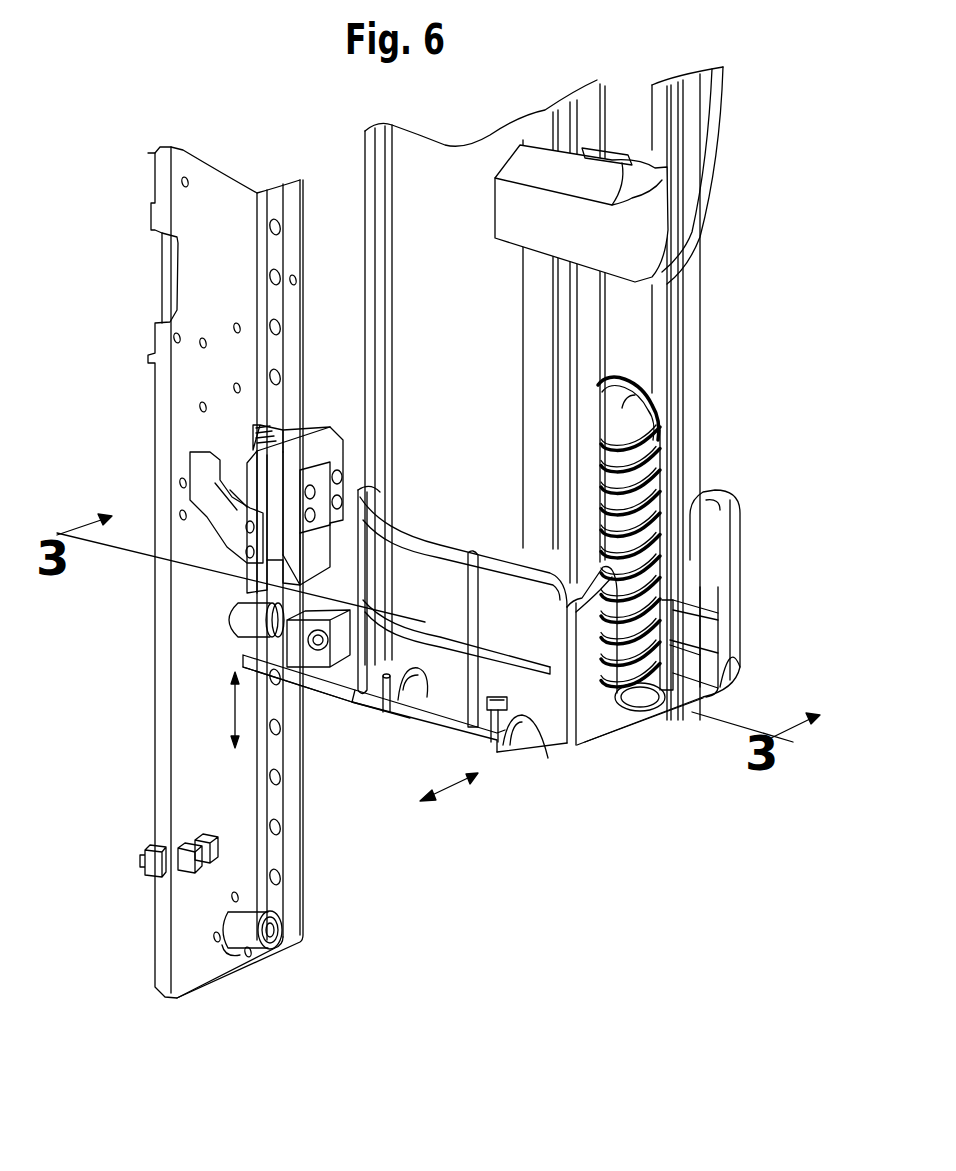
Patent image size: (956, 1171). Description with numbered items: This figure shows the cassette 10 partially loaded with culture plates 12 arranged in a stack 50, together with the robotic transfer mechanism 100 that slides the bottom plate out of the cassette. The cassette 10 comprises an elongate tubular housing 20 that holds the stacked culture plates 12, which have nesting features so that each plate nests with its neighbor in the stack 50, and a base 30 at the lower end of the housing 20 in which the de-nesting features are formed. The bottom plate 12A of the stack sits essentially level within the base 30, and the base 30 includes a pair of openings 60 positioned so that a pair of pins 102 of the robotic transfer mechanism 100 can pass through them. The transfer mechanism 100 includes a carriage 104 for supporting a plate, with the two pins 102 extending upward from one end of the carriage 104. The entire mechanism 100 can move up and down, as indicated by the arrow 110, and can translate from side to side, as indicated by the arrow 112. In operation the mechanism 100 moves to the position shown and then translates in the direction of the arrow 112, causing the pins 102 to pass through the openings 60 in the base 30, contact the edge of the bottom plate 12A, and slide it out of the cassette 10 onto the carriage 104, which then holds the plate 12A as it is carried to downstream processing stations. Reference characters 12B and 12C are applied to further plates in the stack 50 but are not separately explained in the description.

The cassette 10 is at (703, 328).
The culture plate 12 is at (625, 406).
The bottom plate 12A is at (645, 682).
The spring guide 12B is at (663, 628).
The spring seat 12C is at (635, 606).
The tubular housing 20 is at (445, 303).
The base 30 is at (738, 556).
The stack 50 is at (663, 513).
The openings 60 is at (412, 698).
The robotic transfer mechanism 100 is at (338, 420).
The pins 102 is at (385, 703).
The carriage 104 is at (520, 740).
The arrow 110 is at (235, 700).
The arrow 112 is at (443, 792).